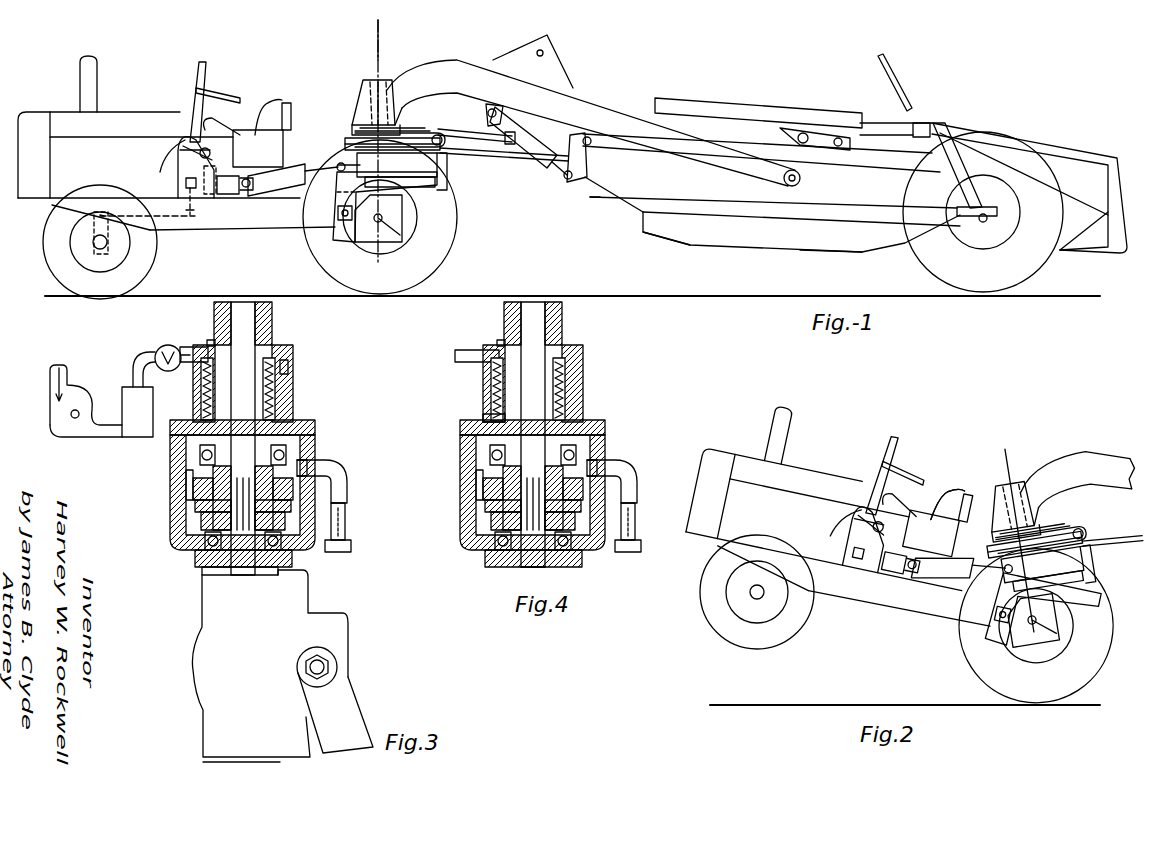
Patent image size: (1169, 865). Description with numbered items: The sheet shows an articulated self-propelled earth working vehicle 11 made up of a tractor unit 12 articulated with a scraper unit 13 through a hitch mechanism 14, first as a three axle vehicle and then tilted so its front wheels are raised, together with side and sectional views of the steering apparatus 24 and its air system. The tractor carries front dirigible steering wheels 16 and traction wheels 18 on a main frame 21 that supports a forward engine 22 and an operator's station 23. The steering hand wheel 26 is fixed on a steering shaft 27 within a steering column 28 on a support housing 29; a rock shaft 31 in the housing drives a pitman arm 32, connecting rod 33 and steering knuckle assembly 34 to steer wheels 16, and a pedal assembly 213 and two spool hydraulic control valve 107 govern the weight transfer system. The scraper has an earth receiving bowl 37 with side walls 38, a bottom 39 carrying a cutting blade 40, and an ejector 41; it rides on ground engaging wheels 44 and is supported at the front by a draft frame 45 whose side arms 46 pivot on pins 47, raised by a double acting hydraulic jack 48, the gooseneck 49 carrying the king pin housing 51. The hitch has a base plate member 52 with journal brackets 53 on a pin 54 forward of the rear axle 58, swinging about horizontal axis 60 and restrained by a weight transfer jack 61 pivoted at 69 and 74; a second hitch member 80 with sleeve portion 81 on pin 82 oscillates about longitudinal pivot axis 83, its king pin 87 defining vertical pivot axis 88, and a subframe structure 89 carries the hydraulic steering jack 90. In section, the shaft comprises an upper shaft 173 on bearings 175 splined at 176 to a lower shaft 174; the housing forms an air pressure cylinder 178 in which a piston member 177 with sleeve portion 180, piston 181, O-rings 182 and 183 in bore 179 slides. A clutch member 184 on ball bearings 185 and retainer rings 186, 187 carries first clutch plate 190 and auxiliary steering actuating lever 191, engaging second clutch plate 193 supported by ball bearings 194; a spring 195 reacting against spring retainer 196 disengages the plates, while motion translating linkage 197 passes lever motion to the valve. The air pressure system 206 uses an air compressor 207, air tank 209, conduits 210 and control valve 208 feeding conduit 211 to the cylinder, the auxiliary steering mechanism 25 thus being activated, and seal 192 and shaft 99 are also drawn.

In FIG. 1, the articulated self-propelled earth working vehicle 11 is at (555, 246).
In FIG. 1, the tractor unit 12 is at (52, 99).
In FIG. 2, the tractor unit 12 is at (741, 435).
In FIG. 1, the scraper unit 13 is at (785, 268).
In FIG. 1, the hitch mechanism 14 is at (362, 80).
In FIG. 2, the hitch mechanism 14 is at (1085, 582).
In FIG. 1, the front dirigible steering wheels 16 is at (50, 272).
In FIG. 2, the front dirigible steering wheels 16 is at (710, 660).
In FIG. 1, the driving or traction wheels 18 is at (440, 266).
In FIG. 2, the driving or traction wheels 18 is at (972, 680).
In FIG. 1, the main frame 21 is at (247, 230).
In FIG. 2, the main frame 21 is at (873, 602).
In FIG. 1, the engine 22 is at (90, 145).
In FIG. 2, the engine 22 is at (790, 488).
In FIG. 1, the operator's station 23 is at (284, 98).
In FIG. 2, the operator's station 23 is at (957, 487).
In FIG. 1, the steering apparatus 24 is at (185, 138).
In FIG. 3, the steering apparatus 24 is at (348, 622).
In FIG. 4, the steering apparatus 24 is at (500, 561).
In FIG. 2, the steering apparatus 24 is at (907, 537).
In FIG. 1, the auxiliary steering mechanism 25 is at (178, 154).
In FIG. 3, the auxiliary steering mechanism 25 is at (318, 457).
In FIG. 4, the auxiliary steering mechanism 25 is at (613, 457).
In FIG. 1, the steering hand wheel 26 is at (212, 92).
In FIG. 2, the steering hand wheel 26 is at (898, 478).
In FIG. 3, the steering shaft 27 is at (288, 322).
In FIG. 4, the steering shaft 27 is at (578, 322).
In FIG. 1, the steering column 28 is at (214, 124).
In FIG. 3, the steering column 28 is at (202, 322).
In FIG. 4, the steering column 28 is at (489, 322).
In FIG. 3, the support housing 29 is at (265, 421).
In FIG. 4, the support housing 29 is at (544, 382).
In FIG. 1, the rock shaft 31 is at (185, 182).
In FIG. 3, the rock shaft 31 is at (297, 667).
In FIG. 1, the pitman arm 32 is at (190, 192).
In FIG. 3, the pitman arm 32 is at (355, 700).
In FIG. 1, the connecting rod 33 is at (172, 222).
In FIG. 1, the steering knuckle assembly 34 is at (98, 226).
In FIG. 1, the earth receiving bowl 37 is at (786, 118).
In FIG. 1, the side walls 38 is at (632, 200).
In FIG. 1, the bottom 39 is at (838, 250).
In FIG. 1, the cutting blade 40 is at (690, 246).
In FIG. 1, the ejector 41 is at (905, 112).
In FIG. 1, the ground engaging wheels 44 is at (922, 268).
In FIG. 1, the draft frame 45 is at (631, 90).
In FIG. 1, the side arms 46 is at (690, 160).
In FIG. 1, the pins 47 is at (800, 178).
In FIG. 1, the double acting hydraulic jack 48 is at (548, 172).
In FIG. 1, the gooseneck 49 is at (452, 60).
In FIG. 2, the gooseneck 49 is at (1092, 447).
In FIG. 1, the king pin housing 51 is at (362, 86).
In FIG. 2, the king pin housing 51 is at (998, 488).
In FIG. 1, the base plate member 52 is at (334, 189).
In FIG. 2, the base plate member 52 is at (996, 590).
In FIG. 1, the journal brackets 53 is at (336, 214).
In FIG. 2, the journal brackets 53 is at (995, 615).
In FIG. 1, the pin 54 is at (345, 234).
In FIG. 2, the pin 54 is at (995, 638).
In FIG. 1, the rear axle 58 is at (402, 233).
In FIG. 2, the rear axle 58 is at (1057, 622).
In FIG. 1, the horizontal axis 60 is at (375, 219).
In FIG. 2, the horizontal axis 60 is at (1033, 630).
In FIG. 1, the weight transfer jack 61 is at (278, 190).
In FIG. 2, the weight transfer jack 61 is at (932, 582).
In FIG. 1, the pivotal connection 69 is at (247, 189).
In FIG. 1, the pivotal connection 74 is at (340, 176).
In FIG. 1, the second hitch member 80 is at (437, 165).
In FIG. 1, the sleeve portion 81 is at (420, 180).
In FIG. 1, the pin 82 is at (447, 186).
In FIG. 1, the longitudinal pivot axis 83 is at (358, 146).
In FIG. 2, the longitudinal pivot axis 83 is at (1095, 560).
In FIG. 1, the king pin 87 is at (378, 101).
In FIG. 2, the king pin 87 is at (1006, 510).
In FIG. 1, the vertical pivot axis 88 is at (382, 36).
In FIG. 2, the vertical pivot axis 88 is at (1008, 442).
In FIG. 1, the subframe structure 89 is at (442, 130).
In FIG. 1, the hydraulic steering jack 90 is at (524, 174).
In FIG. 2, the hydraulic steering jack 90 is at (1112, 522).
In FIG. 1, the shaft 99 is at (408, 129).
In FIG. 1, the two spool hydraulic control valve 107 is at (228, 196).
In FIG. 3, the upper shaft 173 is at (279, 438).
In FIG. 4, the upper shaft 173 is at (570, 434).
In FIG. 3, the lower shaft 174 is at (240, 580).
In FIG. 4, the lower shaft 174 is at (525, 578).
In FIG. 3, the bearings 175 is at (194, 331).
In FIG. 3, the splined connection 176 is at (285, 498).
In FIG. 4, the splined connection 176 is at (581, 498).
In FIG. 3, the piston member 177 is at (308, 383).
In FIG. 4, the piston member 177 is at (601, 383).
In FIG. 3, the air pressure cylinder 178 is at (315, 380).
In FIG. 4, the air pressure cylinder 178 is at (598, 390).
In FIG. 4, the bore 179 is at (474, 339).
In FIG. 3, the sleeve portion 180 is at (298, 390).
In FIG. 3, the piston 181 is at (306, 389).
In FIG. 4, the piston 181 is at (591, 389).
In FIG. 4, the O-ring 182 is at (469, 389).
In FIG. 3, the O-ring 183 is at (262, 377).
In FIG. 4, the O-ring 183 is at (479, 368).
In FIG. 3, the clutch member 184 is at (187, 495).
In FIG. 4, the clutch member 184 is at (471, 498).
In FIG. 3, the ball bearings 185 is at (264, 488).
In FIG. 4, the ball bearings 185 is at (555, 488).
In FIG. 3, the retainer ring 186 is at (225, 440).
In FIG. 3, the retainer ring 187 is at (254, 453).
In FIG. 3, the first clutch plate 190 is at (158, 485).
In FIG. 4, the first clutch plate 190 is at (445, 486).
In FIG. 3, the auxiliary steering actuating lever 191 is at (332, 475).
In FIG. 4, the auxiliary steering actuating lever 191 is at (628, 478).
In FIG. 3, the friction ring 192 is at (217, 496).
In FIG. 4, the friction ring 192 is at (501, 503).
In FIG. 3, the second clutch plate 193 is at (214, 518).
In FIG. 4, the second clutch plate 193 is at (498, 521).
In FIG. 3, the ball bearings 194 is at (224, 554).
In FIG. 4, the ball bearings 194 is at (504, 562).
In FIG. 3, the spring 195 is at (183, 389).
In FIG. 4, the spring 195 is at (468, 390).
In FIG. 4, the spring retainer 196 is at (467, 410).
In FIG. 3, the motion translating linkage 197 is at (356, 527).
In FIG. 4, the motion translating linkage 197 is at (637, 543).
In FIG. 3, the air pressure system 206 is at (140, 352).
In FIG. 3, the air compressor 207 is at (50, 416).
In FIG. 3, the control valve 208 is at (160, 350).
In FIG. 3, the air tank 209 is at (132, 437).
In FIG. 3, the conduits 210 is at (135, 368).
In FIG. 3, the conduit 211 is at (184, 364).
In FIG. 4, the conduit 211 is at (453, 355).
In FIG. 1, the pedal assembly 213 is at (222, 148).